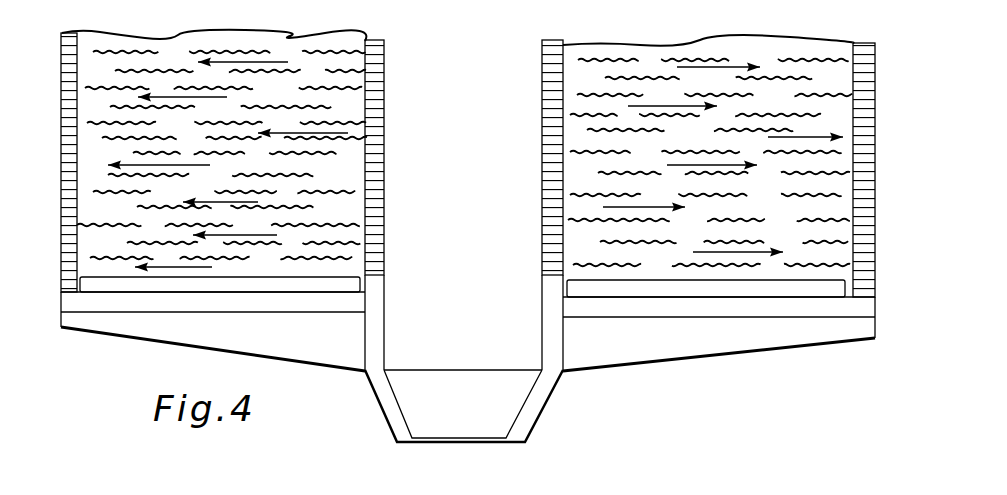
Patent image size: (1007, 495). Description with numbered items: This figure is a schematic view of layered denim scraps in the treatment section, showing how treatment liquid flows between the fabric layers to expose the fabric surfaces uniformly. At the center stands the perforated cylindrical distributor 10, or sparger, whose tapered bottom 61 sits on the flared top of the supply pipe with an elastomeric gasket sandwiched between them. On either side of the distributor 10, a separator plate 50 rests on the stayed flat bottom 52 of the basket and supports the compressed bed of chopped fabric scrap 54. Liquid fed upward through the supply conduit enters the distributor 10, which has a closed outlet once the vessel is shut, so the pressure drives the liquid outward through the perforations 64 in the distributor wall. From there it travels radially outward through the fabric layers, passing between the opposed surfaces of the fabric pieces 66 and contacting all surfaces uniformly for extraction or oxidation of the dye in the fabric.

The perforated cylindrical distributor 10 is at (468, 257).
The separator plate 50 is at (337, 286).
The stayed flat bottom 52 is at (215, 313).
The chopped fabric scrap 54 is at (336, 175).
The tapered bottom 61 is at (468, 415).
The perforations 64 is at (542, 68).
The fabric pieces 66 is at (186, 88).